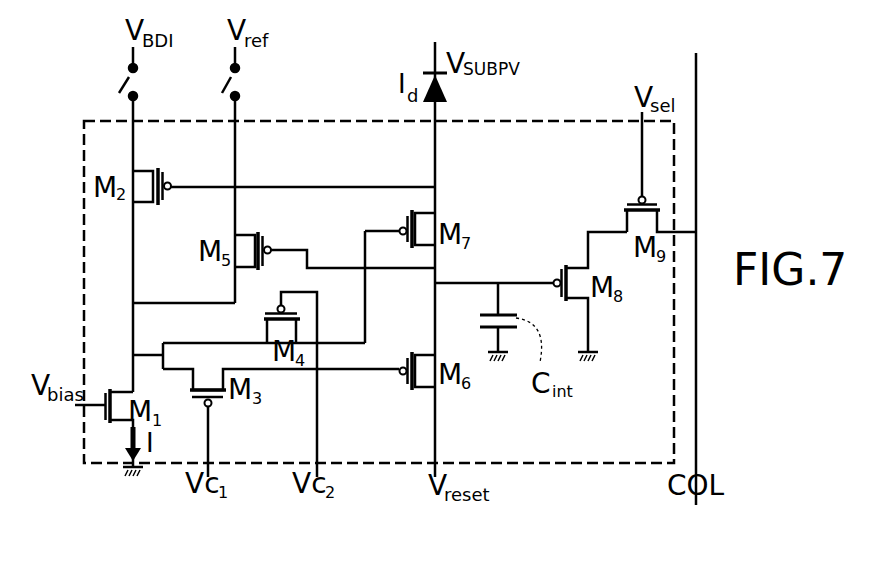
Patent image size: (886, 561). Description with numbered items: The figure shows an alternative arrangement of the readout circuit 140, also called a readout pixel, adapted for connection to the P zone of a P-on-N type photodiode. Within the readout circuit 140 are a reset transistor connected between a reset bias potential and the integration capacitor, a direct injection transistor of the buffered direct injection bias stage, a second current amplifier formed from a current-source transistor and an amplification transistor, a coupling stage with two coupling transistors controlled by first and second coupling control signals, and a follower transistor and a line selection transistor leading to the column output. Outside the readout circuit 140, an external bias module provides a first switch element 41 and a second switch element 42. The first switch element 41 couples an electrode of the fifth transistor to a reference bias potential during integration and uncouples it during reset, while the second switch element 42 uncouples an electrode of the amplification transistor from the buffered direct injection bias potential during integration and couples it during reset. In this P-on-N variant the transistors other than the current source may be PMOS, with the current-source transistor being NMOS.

The second switch element 42 is at (117, 68).
The first switch element 41 is at (258, 84).
The readout circuit 140 is at (604, 472).